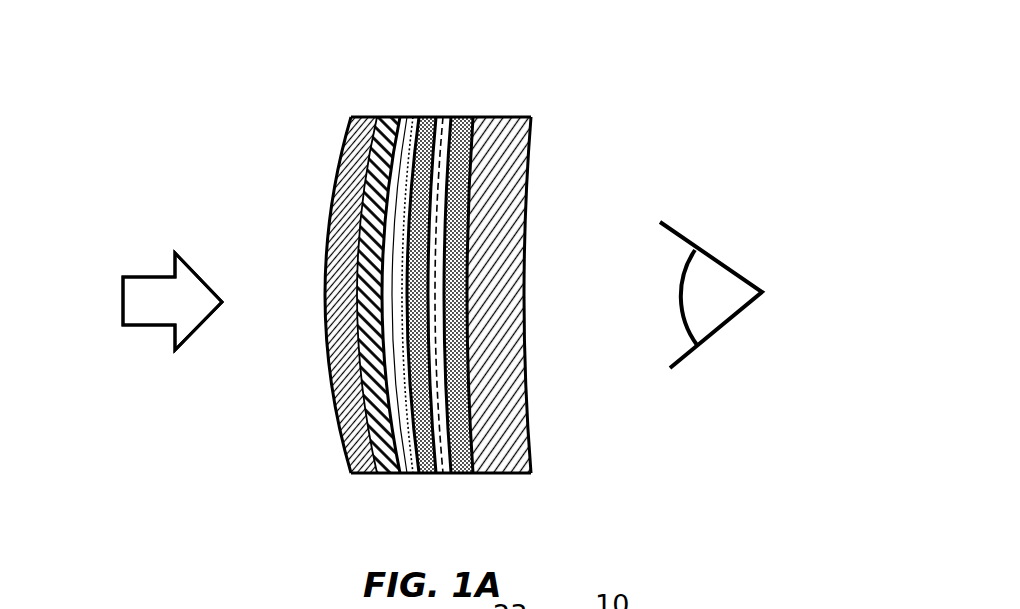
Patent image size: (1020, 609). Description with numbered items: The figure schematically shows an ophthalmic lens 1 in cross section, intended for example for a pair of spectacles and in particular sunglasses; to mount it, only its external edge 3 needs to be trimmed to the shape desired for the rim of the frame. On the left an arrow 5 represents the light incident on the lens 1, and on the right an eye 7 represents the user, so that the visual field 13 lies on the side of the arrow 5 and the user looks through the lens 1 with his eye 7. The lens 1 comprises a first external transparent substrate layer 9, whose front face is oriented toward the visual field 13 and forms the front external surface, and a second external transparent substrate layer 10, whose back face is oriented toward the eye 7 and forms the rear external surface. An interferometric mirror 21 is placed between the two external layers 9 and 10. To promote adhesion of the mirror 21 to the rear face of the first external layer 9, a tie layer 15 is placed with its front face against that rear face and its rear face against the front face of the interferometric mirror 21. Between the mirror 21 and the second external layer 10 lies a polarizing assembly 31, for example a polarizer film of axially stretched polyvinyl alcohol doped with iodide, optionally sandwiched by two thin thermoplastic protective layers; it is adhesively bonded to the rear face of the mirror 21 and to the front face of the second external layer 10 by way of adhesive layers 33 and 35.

The ophthalmic lens 1 is at (607, 95).
The external edge 3 is at (467, 92).
The arrow 5 is at (143, 277).
The eye 7 is at (718, 332).
The first external transparent substrate layer 9 is at (360, 116).
The second external transparent substrate layer 10 is at (508, 117).
The visual field 13 is at (202, 191).
The tie layer 15 is at (400, 475).
The interferometric mirror 21 is at (412, 475).
The polarizing assembly 31 is at (450, 115).
The adhesive layer 33 is at (425, 475).
The adhesive layer 35 is at (453, 475).